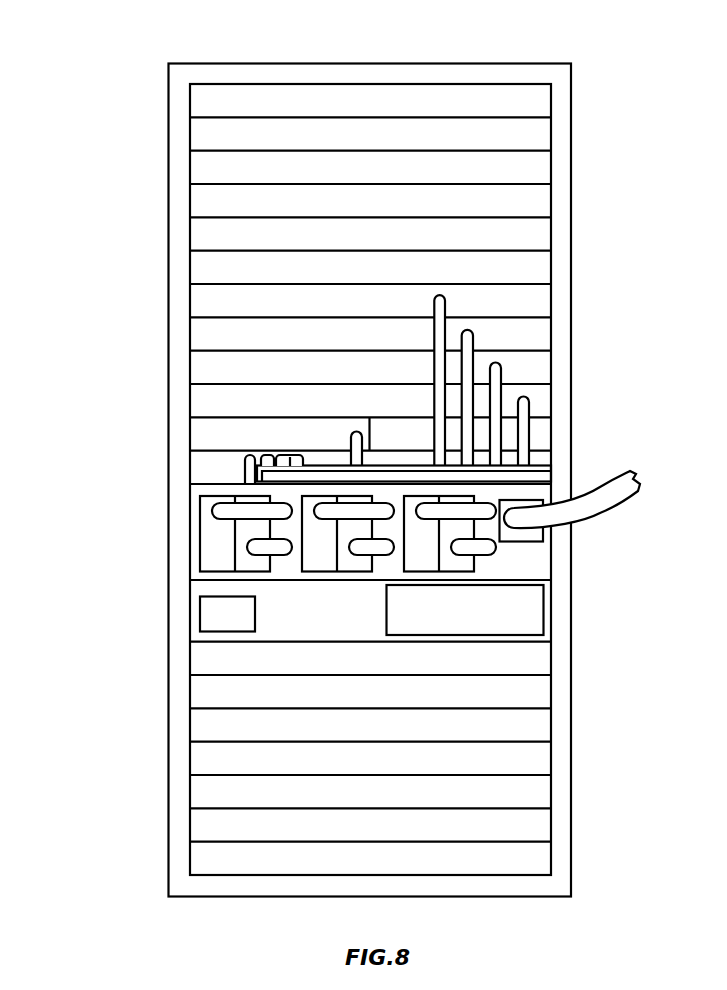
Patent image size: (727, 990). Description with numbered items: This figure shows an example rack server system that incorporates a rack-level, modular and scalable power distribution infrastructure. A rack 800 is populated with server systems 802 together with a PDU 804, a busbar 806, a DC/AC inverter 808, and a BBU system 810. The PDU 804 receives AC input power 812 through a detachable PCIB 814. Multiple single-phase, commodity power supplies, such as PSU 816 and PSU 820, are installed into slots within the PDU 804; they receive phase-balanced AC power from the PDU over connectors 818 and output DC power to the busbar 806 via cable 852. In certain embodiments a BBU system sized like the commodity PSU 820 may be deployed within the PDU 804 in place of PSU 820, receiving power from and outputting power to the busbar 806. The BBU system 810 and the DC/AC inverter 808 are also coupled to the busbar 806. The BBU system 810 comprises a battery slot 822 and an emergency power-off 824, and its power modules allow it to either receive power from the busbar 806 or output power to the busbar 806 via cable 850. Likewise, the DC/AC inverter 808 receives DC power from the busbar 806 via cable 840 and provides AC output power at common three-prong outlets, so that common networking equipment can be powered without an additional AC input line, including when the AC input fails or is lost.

The rack 800 is at (113, 63).
The server systems 802 is at (190, 212).
The PDU 804 is at (200, 511).
The busbar 806 is at (551, 465).
The DC/AC inverter 808 is at (190, 433).
The BBU system 810 is at (190, 587).
The AC input power 812 is at (617, 507).
The detachable PCIB 814 is at (536, 498).
The PSU 816 is at (205, 532).
The connectors 818 is at (247, 510).
The PSU 820 is at (463, 562).
The battery slot 822 is at (532, 610).
The emergency power-off 824 is at (200, 612).
The cable 840 is at (362, 432).
The cable 850 is at (245, 472).
The cable 852 is at (293, 455).